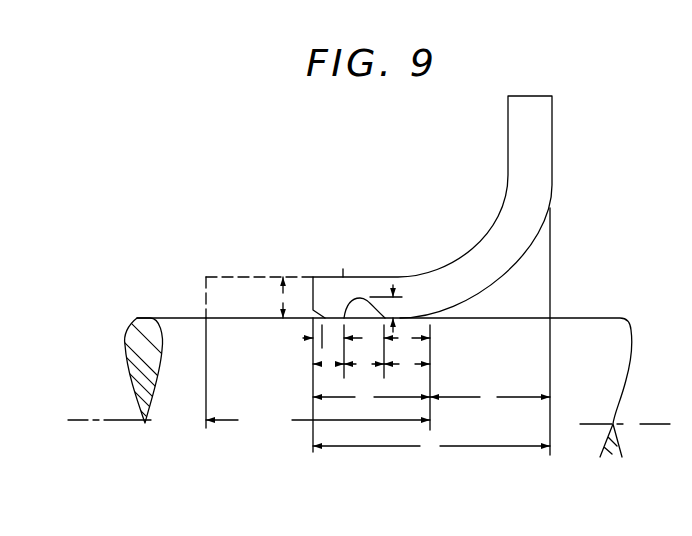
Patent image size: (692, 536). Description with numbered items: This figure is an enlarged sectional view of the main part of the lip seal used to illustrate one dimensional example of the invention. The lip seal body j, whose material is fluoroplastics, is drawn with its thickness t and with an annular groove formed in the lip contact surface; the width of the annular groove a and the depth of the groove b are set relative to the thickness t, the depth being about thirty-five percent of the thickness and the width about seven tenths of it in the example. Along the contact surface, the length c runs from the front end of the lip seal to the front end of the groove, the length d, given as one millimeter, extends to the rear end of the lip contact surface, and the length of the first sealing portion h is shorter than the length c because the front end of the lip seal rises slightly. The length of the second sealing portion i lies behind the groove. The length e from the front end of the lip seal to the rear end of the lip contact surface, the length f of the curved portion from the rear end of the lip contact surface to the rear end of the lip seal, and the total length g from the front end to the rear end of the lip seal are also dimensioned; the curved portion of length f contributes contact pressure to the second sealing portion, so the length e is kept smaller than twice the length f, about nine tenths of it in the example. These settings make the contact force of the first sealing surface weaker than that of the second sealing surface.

The lip seal material j is at (543, 168).
The thickness of the lip seal t is at (281, 297).
The depth of the groove b is at (393, 309).
The length of the first sealing portion h is at (332, 338).
The length of the second sealing portion i is at (407, 338).
The length between the front end of the lip seal and the front end of the groove c is at (328, 364).
The width of the annular groove a is at (364, 364).
The length to the rear end of the lip contact surface d is at (407, 364).
The length between the front end of the lip seal and the rear end of the lip contact e is at (371, 397).
The length between the rear end of the lip contact surface and the rear end of the l f is at (490, 397).
The length between the front end of the lip seal and the rear end of the lip seal g is at (431, 446).